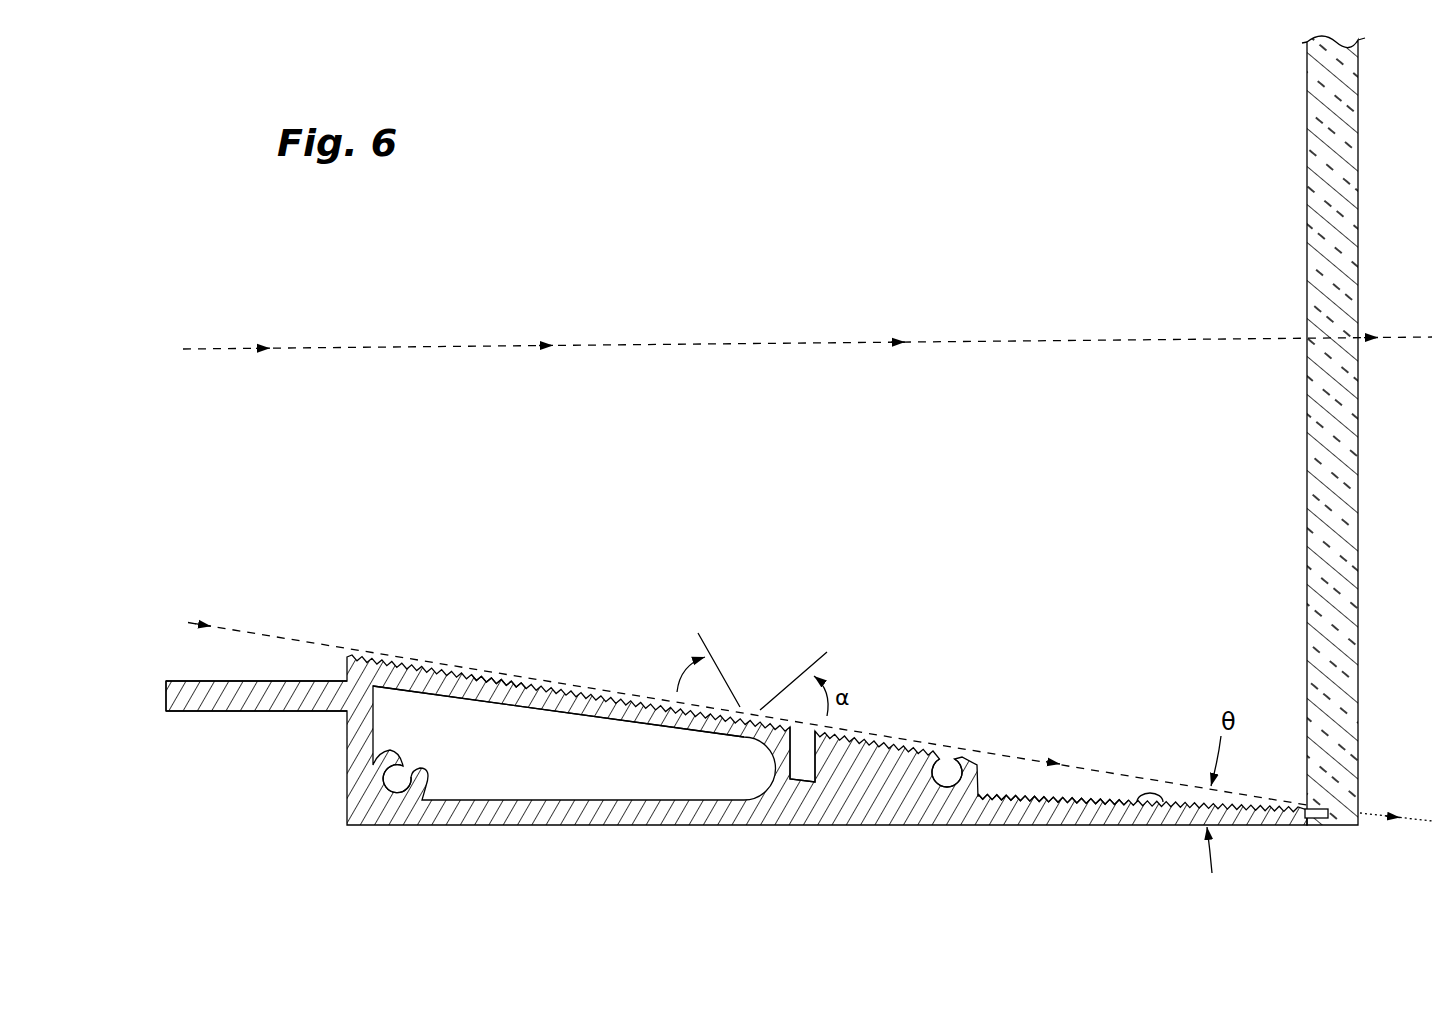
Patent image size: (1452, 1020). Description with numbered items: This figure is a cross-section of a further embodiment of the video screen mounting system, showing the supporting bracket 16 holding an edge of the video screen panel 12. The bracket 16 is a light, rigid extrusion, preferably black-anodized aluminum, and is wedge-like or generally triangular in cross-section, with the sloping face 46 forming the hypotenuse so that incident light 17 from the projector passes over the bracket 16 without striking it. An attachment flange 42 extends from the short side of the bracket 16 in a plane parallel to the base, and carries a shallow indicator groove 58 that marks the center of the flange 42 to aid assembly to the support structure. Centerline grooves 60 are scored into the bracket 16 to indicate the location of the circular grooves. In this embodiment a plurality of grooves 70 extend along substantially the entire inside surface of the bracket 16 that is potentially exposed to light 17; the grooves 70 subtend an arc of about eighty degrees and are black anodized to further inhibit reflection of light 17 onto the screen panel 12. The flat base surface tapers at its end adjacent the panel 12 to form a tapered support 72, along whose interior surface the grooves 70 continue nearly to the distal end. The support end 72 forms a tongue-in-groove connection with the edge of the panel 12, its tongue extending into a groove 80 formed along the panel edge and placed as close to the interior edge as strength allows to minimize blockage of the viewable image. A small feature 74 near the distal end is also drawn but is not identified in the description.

The video screen panel 12 is at (1343, 102).
The supporting bracket 16 is at (688, 828).
The light 17 is at (1015, 752).
The attachment flange 42 is at (205, 681).
The sloping face 46 is at (604, 697).
The indicator groove 58 is at (258, 712).
The centerline grooves 60 is at (400, 830).
The grooves 70 is at (498, 672).
The tapered support 72 is at (1073, 824).
The notch 74 is at (1323, 822).
The groove 80 is at (752, 674).